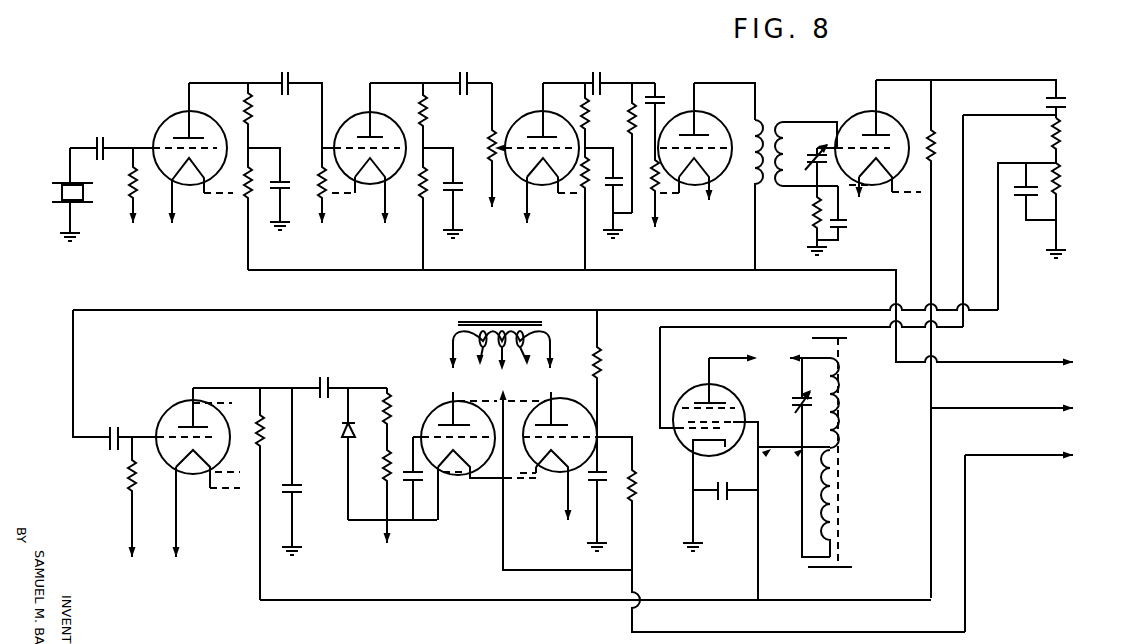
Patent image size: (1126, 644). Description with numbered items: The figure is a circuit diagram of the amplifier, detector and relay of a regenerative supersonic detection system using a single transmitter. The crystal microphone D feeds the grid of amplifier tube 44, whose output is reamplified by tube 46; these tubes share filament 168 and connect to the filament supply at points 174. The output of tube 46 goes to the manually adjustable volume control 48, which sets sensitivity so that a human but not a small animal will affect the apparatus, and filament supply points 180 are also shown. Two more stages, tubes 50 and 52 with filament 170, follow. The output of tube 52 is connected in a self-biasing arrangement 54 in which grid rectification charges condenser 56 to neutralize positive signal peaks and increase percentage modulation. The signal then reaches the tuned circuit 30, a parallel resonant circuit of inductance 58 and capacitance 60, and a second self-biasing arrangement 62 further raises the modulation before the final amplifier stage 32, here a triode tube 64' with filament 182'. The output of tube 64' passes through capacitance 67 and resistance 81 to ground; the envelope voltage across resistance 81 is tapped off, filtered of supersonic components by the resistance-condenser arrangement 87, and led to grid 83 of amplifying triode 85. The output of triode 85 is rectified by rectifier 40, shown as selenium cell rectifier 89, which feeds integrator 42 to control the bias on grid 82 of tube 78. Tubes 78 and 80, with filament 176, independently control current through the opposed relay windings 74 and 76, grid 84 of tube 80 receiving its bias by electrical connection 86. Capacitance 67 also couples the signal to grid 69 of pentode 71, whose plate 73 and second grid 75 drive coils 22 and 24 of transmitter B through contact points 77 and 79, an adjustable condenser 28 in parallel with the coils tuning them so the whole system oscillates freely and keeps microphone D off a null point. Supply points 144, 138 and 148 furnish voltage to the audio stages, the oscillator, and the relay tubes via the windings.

The microphone D is at (48, 196).
The amplifier tube 44 is at (168, 126).
The filament 168 is at (203, 175).
The point 174 is at (130, 224).
The tube 46 is at (380, 120).
The volume control 48 is at (489, 134).
The point 180 is at (490, 220).
The tube 50 is at (533, 118).
The filament 170 is at (540, 180).
The self-biasing arrangement 54 is at (598, 152).
The condenser 56 is at (607, 200).
The tube 52 is at (712, 122).
The inductance 58 is at (775, 127).
The tuned circuit 30 is at (800, 122).
The capacitance 60 is at (803, 220).
The self-biasing arrangement 62 is at (840, 238).
The final amplifier stage 32 is at (864, 120).
The triode tube 64' is at (888, 107).
The filament 182' is at (885, 189).
The capacitance 67 is at (1068, 100).
The resistance 81 is at (1059, 183).
The resistance-condenser arrangement 87 is at (1019, 204).
The grid 83 is at (167, 418).
The amplifying triode 85 is at (182, 410).
The rectifier 40 is at (360, 394).
The selenium cell rectifier 89 is at (345, 430).
The integrator 42 is at (417, 488).
The grid 82 is at (432, 418).
The tube 78 is at (447, 407).
The filament 176 is at (467, 453).
The winding 74 is at (477, 358).
The winding 76 is at (529, 356).
The tube 80 is at (563, 413).
The grid 84 is at (568, 445).
The electrical connection 86 is at (598, 323).
The plate 73 is at (700, 400).
The pentode 71 is at (738, 393).
The second grid 75 is at (724, 424).
The grid 69 is at (692, 433).
The contact point 77 is at (788, 357).
The contact point 79 is at (796, 452).
The adjustable condenser 28 is at (805, 457).
The magnetostriction coil 22 is at (847, 397).
The transmitter B is at (855, 444).
The magnetostriction coil 24 is at (838, 490).
The point 144 is at (1075, 362).
The point 138 is at (1075, 408).
The point 148 is at (1075, 457).